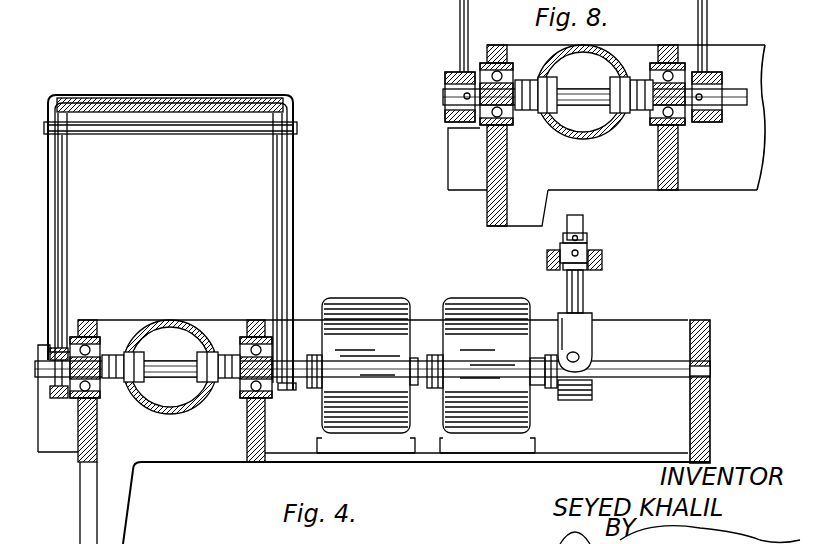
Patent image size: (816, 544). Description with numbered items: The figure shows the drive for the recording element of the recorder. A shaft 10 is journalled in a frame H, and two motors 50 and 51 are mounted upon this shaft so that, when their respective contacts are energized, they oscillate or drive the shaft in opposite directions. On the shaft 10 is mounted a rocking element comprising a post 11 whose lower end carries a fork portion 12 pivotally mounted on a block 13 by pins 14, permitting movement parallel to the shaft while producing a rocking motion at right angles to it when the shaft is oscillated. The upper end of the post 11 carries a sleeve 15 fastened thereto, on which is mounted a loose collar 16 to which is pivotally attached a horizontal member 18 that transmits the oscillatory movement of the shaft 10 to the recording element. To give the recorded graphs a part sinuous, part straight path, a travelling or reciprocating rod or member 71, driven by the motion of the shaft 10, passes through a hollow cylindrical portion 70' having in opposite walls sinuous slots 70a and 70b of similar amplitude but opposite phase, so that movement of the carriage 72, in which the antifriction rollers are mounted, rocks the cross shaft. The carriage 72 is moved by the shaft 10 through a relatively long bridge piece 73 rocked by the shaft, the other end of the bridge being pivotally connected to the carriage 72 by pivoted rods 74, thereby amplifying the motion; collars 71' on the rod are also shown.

In FIG. 4, the shaft 10 is at (428, 355).
In FIG. 8, the shaft 10 is at (745, 97).
In FIG. 4, the post 11 is at (580, 227).
In FIG. 4, the fork portion 12 is at (577, 327).
In FIG. 4, the block 13 is at (582, 393).
In FIG. 4, the pin 14 is at (592, 380).
In FIG. 4, the sleeve 15 is at (583, 243).
In FIG. 4, the loose collar 16 is at (588, 248).
In FIG. 4, the horizontal member 18 is at (548, 255).
In FIG. 4, the motor 50 is at (500, 313).
In FIG. 4, the motor 51 is at (353, 322).
In FIG. 4, the sinuous slot 70a is at (126, 348).
In FIG. 8, the sinuous slot 70a is at (540, 78).
In FIG. 4, the hollow cylindrical portion 70' is at (170, 313).
In FIG. 8, the hollow cylindrical portion 70' is at (591, 55).
In FIG. 4, the sinuous slot 70b is at (200, 385).
In FIG. 8, the sinuous slot 70b is at (617, 118).
In FIG. 4, the travelling rod 71 is at (174, 329).
In FIG. 8, the travelling rod 71 is at (583, 132).
In FIG. 4, the shaft collars 71' is at (172, 398).
In FIG. 8, the shaft collars 71' is at (588, 121).
In FIG. 4, the carriage 72 is at (102, 338).
In FIG. 8, the carriage 72 is at (487, 110).
In FIG. 4, the bridge piece 73 is at (50, 243).
In FIG. 8, the bridge piece 73 is at (460, 36).
In FIG. 4, the pivoted rods 74 is at (67, 236).
In FIG. 4, the frame H is at (712, 343).
In FIG. 8, the frame H is at (490, 203).